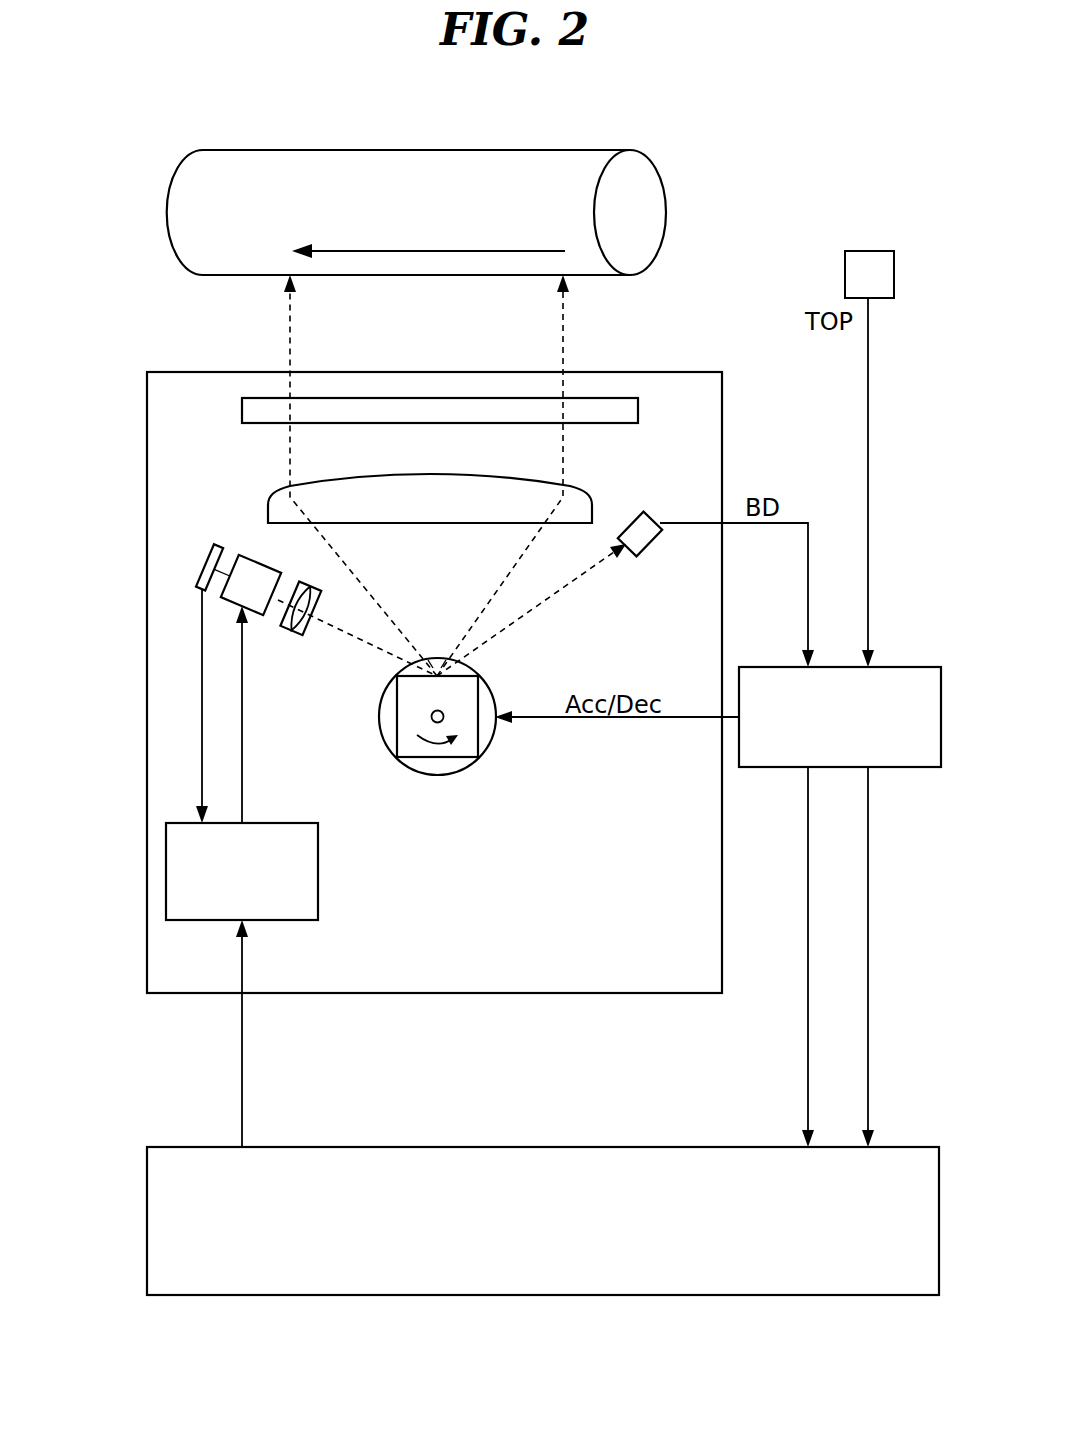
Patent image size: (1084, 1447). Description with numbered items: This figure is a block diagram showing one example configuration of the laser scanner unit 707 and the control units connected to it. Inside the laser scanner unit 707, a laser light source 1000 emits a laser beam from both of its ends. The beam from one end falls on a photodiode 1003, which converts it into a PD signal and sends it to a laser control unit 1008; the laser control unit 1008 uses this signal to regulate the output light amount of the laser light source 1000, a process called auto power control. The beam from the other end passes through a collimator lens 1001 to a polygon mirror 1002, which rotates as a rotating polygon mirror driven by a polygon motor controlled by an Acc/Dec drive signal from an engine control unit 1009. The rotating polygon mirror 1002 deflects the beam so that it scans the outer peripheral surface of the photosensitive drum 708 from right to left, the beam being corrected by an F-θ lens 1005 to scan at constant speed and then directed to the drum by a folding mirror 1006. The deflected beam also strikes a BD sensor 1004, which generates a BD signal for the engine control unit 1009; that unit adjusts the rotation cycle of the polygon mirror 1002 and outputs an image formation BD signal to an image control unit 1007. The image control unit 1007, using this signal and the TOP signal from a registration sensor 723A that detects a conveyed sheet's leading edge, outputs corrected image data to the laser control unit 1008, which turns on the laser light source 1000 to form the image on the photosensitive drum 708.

The photosensitive drum 708 is at (427, 150).
The registration sensor 723A is at (869, 251).
The laser scanner unit 707 is at (193, 372).
The BD sensor 1004 is at (640, 512).
The folding mirror 1006 is at (242, 408).
The F-θ lens 1005 is at (268, 510).
The laser light source 1000 is at (250, 558).
The photodiode 1003 is at (200, 560).
The collimator lens 1001 is at (305, 632).
The polygon mirror 1002 is at (438, 776).
The engine control unit 1009 is at (913, 667).
The laser control unit 1008 is at (166, 866).
The image control unit 1007 is at (555, 1295).